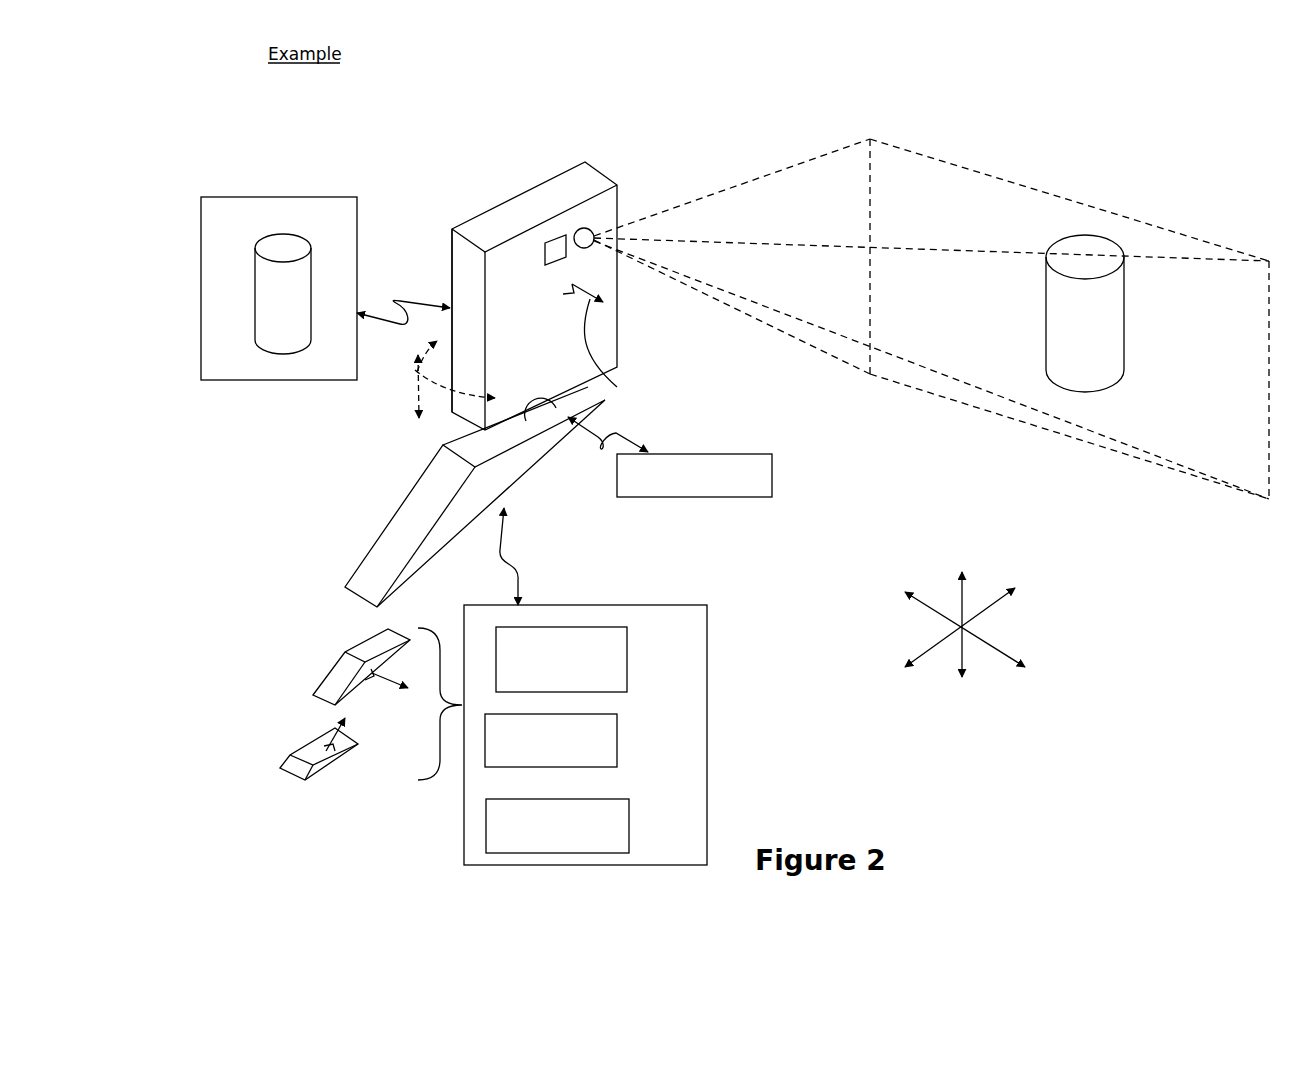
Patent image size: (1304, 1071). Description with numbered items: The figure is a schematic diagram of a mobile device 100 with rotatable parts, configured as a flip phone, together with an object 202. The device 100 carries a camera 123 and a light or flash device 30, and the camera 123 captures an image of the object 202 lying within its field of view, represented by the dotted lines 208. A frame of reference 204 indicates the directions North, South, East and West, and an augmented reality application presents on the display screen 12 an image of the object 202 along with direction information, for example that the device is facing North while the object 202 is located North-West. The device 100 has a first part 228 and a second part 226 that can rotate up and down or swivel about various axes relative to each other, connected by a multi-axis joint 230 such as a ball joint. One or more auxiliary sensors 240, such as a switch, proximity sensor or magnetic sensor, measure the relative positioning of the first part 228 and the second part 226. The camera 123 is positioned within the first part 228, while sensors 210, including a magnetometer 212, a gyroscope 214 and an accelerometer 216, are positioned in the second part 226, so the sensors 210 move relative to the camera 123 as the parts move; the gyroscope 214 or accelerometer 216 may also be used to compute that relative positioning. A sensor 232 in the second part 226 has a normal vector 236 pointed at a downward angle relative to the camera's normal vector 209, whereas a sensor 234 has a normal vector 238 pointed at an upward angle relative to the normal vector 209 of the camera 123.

The display screen 12 is at (279, 197).
The light or flash device 30 is at (552, 237).
The mobile device 100 is at (562, 172).
The camera 123 is at (592, 231).
The object 202 is at (1098, 235).
The frame of reference 204 is at (1007, 632).
The dotted lines 208 is at (774, 321).
The camera's normal vector 209 is at (607, 345).
The sensors 210 is at (650, 605).
The magnetometer 212 is at (627, 670).
The gyroscope 214 is at (617, 755).
The accelerometer 216 is at (629, 830).
The second part 226 is at (377, 540).
The first part 228 is at (463, 228).
The multi-axis joint 230 is at (540, 413).
The sensor 232 is at (333, 660).
The sensor 234 is at (292, 768).
The normal vector 236 is at (388, 685).
The normal vector 238 is at (328, 720).
The auxiliary sensors 240 is at (772, 474).